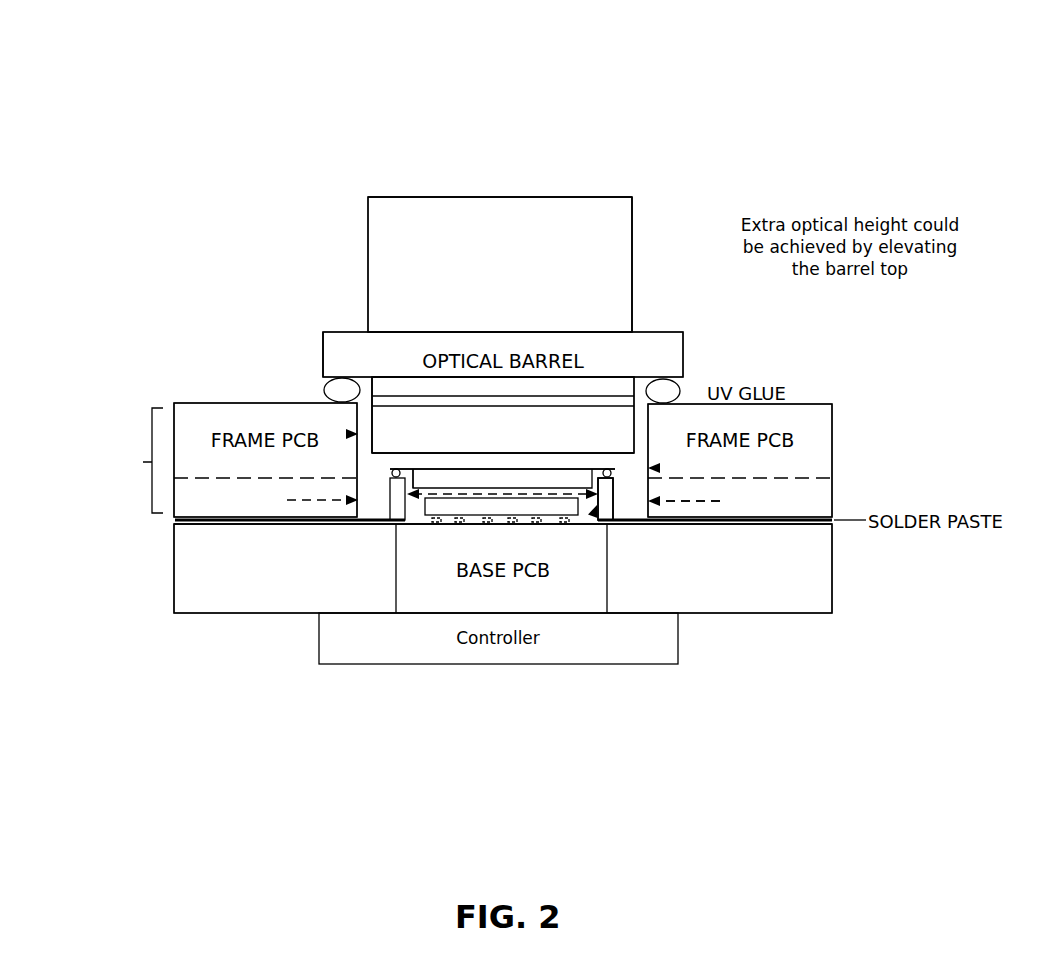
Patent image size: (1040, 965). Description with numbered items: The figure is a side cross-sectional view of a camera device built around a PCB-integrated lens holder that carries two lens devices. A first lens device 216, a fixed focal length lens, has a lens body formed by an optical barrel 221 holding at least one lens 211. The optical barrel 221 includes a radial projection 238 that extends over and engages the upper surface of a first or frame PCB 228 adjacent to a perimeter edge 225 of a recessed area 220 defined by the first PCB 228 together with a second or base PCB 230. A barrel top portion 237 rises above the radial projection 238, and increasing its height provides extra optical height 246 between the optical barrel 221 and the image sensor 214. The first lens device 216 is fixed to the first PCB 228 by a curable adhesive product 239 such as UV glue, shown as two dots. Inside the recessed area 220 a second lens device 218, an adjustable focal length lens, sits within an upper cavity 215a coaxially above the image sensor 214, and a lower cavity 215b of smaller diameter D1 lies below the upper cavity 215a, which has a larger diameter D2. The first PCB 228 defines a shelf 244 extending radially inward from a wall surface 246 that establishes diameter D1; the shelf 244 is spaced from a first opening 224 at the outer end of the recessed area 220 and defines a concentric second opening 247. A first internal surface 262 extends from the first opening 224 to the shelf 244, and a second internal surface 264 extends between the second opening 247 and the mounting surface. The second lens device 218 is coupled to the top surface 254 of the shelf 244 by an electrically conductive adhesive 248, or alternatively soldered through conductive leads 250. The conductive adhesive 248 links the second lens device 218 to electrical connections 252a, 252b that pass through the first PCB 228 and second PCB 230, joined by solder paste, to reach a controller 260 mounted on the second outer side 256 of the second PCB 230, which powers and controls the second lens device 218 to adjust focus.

The lens 211 is at (490, 400).
The image sensor 214 is at (448, 517).
The upper cavity 215a is at (570, 460).
The lower cavity 215b is at (610, 522).
The first lens device 216 is at (602, 197).
The second lens device 218 is at (452, 477).
The recessed area 220 is at (658, 467).
The optical barrel 221 is at (547, 230).
The first opening 224 is at (355, 417).
The perimeter edge 225 is at (362, 385).
The first PCB 228 is at (129, 460).
The second PCB 230 is at (178, 573).
The barrel top portion 237 is at (633, 275).
The radial projection 238 is at (322, 353).
The curable adhesive product 239 is at (324, 390).
The shelf 244 is at (360, 525).
The wall surface 246 is at (347, 434).
The second opening 247 is at (597, 505).
The electrically conductive adhesive 248 is at (386, 480).
The conductive leads 250 is at (655, 377).
The electrical connection 252a is at (388, 512).
The electrical connection 252b is at (392, 520).
The top surface 254 is at (377, 470).
The second outer side 256 is at (805, 614).
The controller 260 is at (498, 665).
The first internal surface 262 is at (648, 420).
The second internal surface 264 is at (413, 468).
The diameter of lower cavity D1 is at (548, 490).
The diameter of upper cavity D2 is at (720, 501).